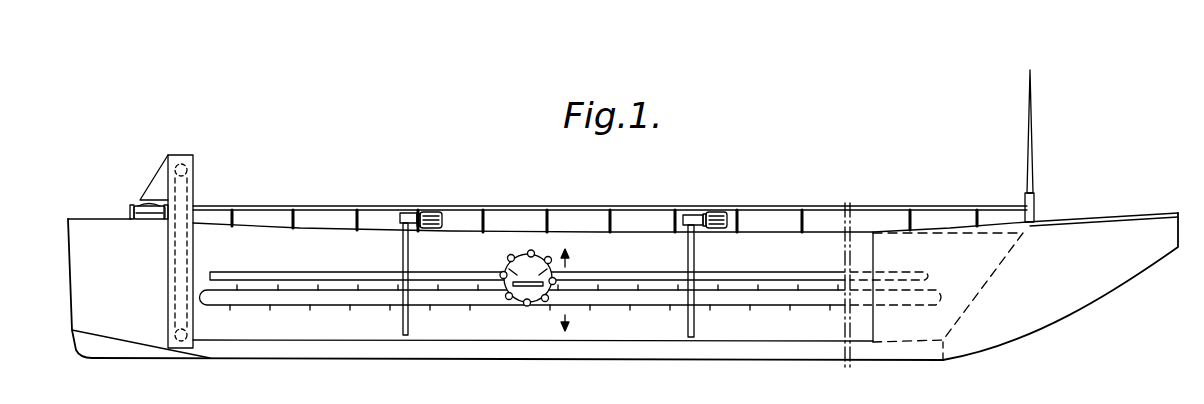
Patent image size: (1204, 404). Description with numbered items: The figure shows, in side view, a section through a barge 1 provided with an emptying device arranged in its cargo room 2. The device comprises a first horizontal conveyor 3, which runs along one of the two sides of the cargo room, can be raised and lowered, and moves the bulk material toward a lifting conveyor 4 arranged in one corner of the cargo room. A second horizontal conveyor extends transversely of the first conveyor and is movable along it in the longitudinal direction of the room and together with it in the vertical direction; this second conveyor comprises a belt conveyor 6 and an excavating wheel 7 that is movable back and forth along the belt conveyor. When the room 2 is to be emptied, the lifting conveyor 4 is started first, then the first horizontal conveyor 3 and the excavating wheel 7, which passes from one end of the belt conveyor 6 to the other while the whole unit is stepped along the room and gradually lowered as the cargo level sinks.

The barge 1 is at (437, 360).
The room 2 is at (746, 245).
The first horizontal conveyor 3 is at (647, 305).
The lifting conveyor 4 is at (181, 317).
The belt conveyor 6 is at (521, 270).
The excavating wheel 7 is at (538, 305).